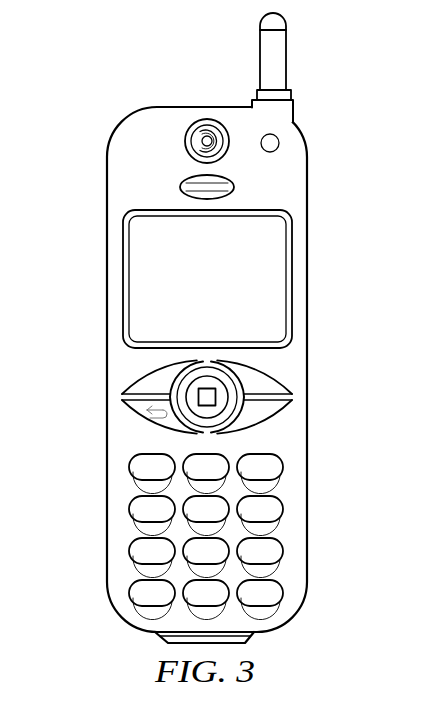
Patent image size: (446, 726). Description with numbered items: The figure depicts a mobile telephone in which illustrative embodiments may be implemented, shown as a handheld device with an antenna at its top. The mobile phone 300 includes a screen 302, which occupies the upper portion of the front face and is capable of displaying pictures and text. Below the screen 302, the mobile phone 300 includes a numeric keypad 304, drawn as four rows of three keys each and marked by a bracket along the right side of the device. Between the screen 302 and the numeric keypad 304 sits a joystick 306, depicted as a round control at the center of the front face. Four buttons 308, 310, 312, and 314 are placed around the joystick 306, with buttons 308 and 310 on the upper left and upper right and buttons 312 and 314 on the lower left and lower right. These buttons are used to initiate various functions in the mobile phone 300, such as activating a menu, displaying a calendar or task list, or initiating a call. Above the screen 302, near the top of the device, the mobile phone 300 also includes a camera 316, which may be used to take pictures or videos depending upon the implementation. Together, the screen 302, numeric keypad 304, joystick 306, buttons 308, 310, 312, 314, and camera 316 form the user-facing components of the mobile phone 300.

The mobile phone 300 is at (91, 96).
The screen 302 is at (223, 296).
The numeric keypad 304 is at (315, 450).
The joystick 306 is at (212, 388).
The button 308 is at (142, 372).
The button 310 is at (272, 372).
The button 312 is at (142, 425).
The button 314 is at (270, 426).
The camera 316 is at (185, 143).